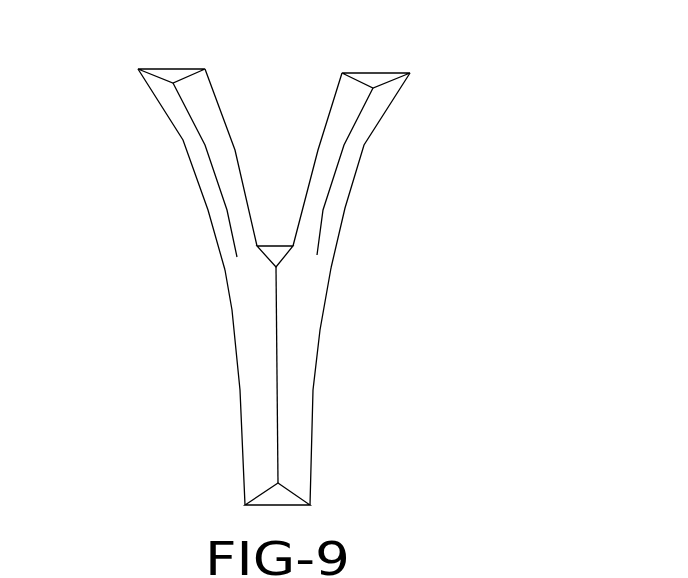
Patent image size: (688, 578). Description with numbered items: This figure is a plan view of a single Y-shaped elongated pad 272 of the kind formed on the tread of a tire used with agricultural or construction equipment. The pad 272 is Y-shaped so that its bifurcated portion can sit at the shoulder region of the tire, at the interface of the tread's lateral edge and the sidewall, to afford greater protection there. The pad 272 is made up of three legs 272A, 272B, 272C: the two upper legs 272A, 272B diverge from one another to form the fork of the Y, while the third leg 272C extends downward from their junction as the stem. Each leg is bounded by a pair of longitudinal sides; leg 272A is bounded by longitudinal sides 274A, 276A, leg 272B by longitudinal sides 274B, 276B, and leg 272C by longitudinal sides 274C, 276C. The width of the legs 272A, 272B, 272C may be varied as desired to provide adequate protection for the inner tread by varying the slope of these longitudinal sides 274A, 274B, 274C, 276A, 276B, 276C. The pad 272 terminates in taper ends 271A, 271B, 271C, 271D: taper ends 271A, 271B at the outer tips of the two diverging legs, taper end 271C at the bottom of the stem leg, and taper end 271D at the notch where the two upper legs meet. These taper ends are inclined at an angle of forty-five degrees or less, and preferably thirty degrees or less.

The elongated pad 272 is at (274, 272).
The taper end 271A is at (170, 73).
The taper end 271B is at (377, 80).
The taper end 271C is at (280, 497).
The taper end 271D is at (283, 248).
The leg 272A is at (210, 208).
The leg 272B is at (343, 208).
The leg 272C is at (245, 447).
The longitudinal side 274A is at (198, 145).
The longitudinal side 274B is at (340, 137).
The longitudinal side 274C is at (253, 313).
The longitudinal side 276A is at (213, 137).
The longitudinal side 276B is at (353, 145).
The longitudinal side 276C is at (300, 313).